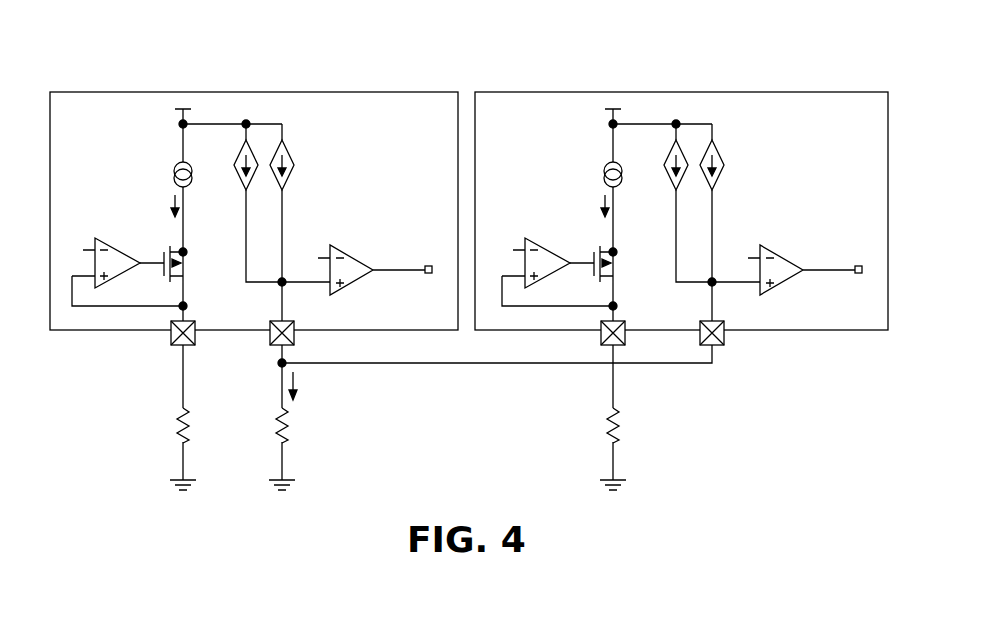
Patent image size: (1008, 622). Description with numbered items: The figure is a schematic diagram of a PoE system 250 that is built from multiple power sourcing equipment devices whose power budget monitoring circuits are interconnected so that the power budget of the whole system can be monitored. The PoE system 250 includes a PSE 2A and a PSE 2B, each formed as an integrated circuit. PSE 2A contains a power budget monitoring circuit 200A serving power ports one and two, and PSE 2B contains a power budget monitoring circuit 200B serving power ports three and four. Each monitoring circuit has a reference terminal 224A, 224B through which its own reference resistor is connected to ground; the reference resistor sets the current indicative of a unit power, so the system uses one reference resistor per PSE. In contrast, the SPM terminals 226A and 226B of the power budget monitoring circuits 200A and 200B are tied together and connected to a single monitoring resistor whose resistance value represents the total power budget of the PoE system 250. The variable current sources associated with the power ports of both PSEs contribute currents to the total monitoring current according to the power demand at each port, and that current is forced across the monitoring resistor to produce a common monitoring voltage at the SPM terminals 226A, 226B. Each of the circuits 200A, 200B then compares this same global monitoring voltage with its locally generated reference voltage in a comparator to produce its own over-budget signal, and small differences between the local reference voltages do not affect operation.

The PoE system 250 is at (170, 50).
The PSE 2A is at (347, 91).
The PSE 2B is at (765, 91).
The power budget monitoring circuit 200A is at (382, 149).
The power budget monitoring circuit 200B is at (800, 149).
The reference resistor terminal 224A is at (170, 340).
The SPM terminal 226A is at (270, 340).
The reference resistor terminal 224B is at (600, 340).
The SPM terminal 226B is at (700, 340).